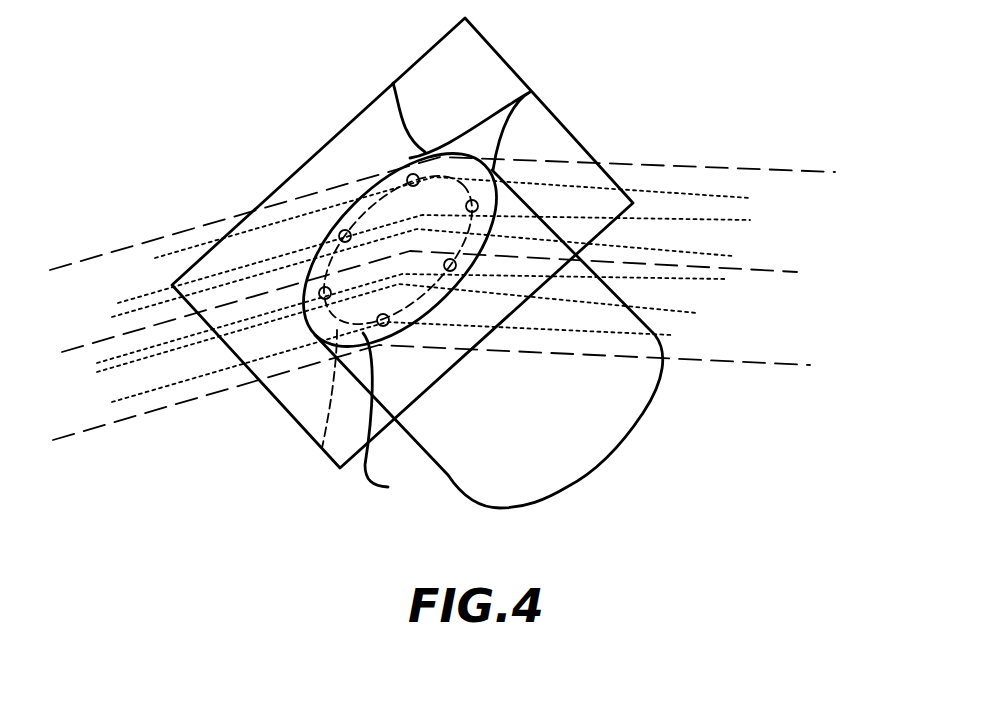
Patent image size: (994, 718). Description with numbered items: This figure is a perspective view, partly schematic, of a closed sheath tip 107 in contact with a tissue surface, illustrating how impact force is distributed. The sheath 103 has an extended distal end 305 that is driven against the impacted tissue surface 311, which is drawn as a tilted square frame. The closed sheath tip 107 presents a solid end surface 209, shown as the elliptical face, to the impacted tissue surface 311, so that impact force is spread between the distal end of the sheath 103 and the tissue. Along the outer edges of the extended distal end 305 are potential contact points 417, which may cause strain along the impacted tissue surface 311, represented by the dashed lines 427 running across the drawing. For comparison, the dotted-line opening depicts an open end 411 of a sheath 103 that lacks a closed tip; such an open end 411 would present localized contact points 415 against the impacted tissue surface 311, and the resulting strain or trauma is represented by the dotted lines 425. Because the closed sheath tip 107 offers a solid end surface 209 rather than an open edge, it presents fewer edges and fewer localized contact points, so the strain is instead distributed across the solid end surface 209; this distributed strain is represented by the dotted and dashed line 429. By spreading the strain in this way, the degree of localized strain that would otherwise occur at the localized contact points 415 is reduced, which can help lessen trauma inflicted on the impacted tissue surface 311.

The sheath 103 is at (568, 490).
The closed sheath tip 107 is at (608, 405).
The solid end surface 209 is at (402, 203).
The extended distal end 305 is at (305, 351).
The impacted tissue surface 311 is at (297, 171).
The open end 411 is at (322, 448).
The localized contact points 415 is at (530, 92).
The potential contact points 417 is at (393, 83).
The dotted lines 425 is at (693, 220).
The dashed lines 427 is at (786, 169).
The dotted and dashed line 429 is at (777, 270).